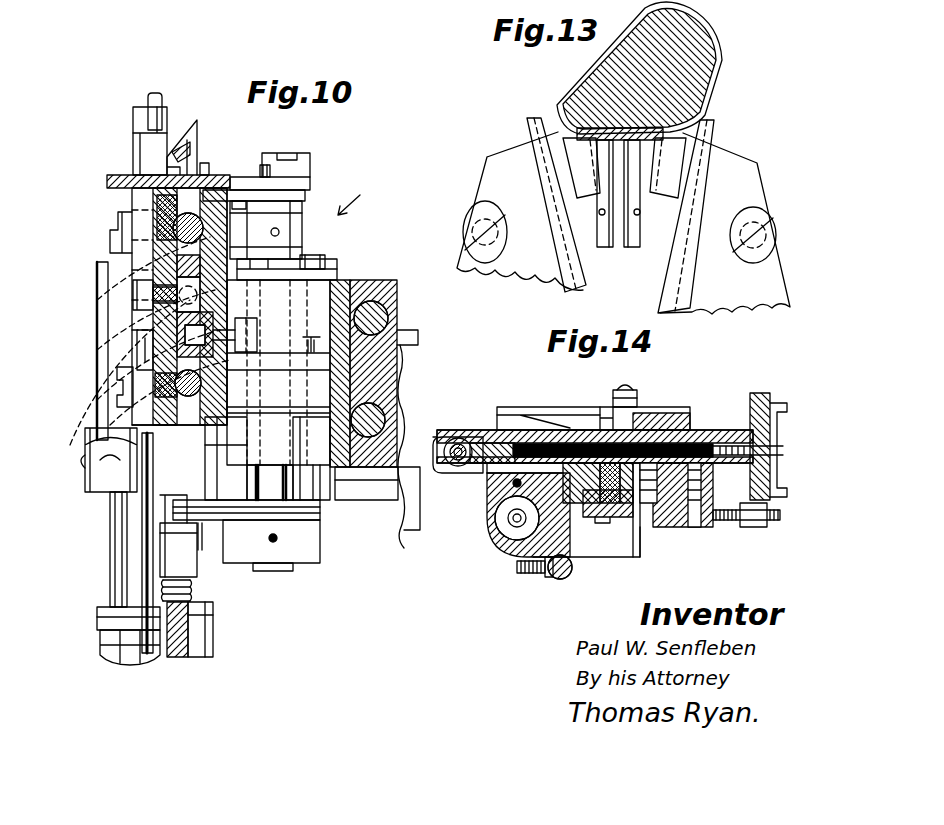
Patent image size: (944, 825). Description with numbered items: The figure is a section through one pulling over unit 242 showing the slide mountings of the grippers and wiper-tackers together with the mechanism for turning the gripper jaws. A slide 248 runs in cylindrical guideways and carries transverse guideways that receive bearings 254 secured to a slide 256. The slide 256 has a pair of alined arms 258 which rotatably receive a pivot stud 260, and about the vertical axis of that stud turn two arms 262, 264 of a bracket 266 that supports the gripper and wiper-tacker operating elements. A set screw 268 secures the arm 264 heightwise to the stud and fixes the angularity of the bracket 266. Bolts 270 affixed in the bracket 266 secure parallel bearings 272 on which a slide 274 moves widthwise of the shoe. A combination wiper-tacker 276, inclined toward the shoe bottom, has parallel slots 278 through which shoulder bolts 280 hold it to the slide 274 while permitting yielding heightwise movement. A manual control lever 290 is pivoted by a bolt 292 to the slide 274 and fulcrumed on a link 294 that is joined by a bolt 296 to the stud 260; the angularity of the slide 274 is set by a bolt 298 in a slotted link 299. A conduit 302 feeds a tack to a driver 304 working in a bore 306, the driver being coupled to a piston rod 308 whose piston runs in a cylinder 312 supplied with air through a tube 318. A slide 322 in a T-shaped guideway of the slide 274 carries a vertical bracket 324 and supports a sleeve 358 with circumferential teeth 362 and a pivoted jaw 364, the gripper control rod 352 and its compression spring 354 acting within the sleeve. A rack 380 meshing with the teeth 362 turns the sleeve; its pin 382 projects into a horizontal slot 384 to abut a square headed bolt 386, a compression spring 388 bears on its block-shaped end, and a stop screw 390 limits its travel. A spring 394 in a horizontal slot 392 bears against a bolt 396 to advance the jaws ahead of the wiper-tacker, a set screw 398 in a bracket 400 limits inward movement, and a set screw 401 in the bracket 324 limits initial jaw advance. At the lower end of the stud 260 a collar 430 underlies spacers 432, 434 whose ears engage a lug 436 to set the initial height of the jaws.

In FIG. 10, the pulling over unit 242 is at (368, 194).
In FIG. 10, the slide 248 is at (400, 330).
In FIG. 10, the bearings 254 is at (402, 340).
In FIG. 14, the bearings 254 is at (480, 430).
In FIG. 10, the slide 256 is at (318, 465).
In FIG. 10, the alined arms 258 is at (348, 282).
In FIG. 10, the pivot stud 260 is at (280, 571).
In FIG. 10, the arm 262 is at (242, 413).
In FIG. 10, the arm 264 is at (312, 207).
In FIG. 10, the bracket 266 is at (240, 200).
In FIG. 14, the bracket 266 is at (672, 410).
In FIG. 10, the set screw 268 is at (281, 232).
In FIG. 10, the bolts 270 is at (210, 166).
In FIG. 10, the bearings 272 is at (157, 215).
In FIG. 10, the slide 274 is at (110, 245).
In FIG. 14, the slide 274 is at (580, 495).
In FIG. 10, the wiper-tacker 276 is at (133, 115).
In FIG. 13, the wiper-tacker 276 is at (530, 268).
In FIG. 14, the wiper-tacker 276 is at (590, 520).
In FIG. 13, the slots 278 is at (487, 230).
In FIG. 10, the shoulder bolts 280 is at (115, 420).
In FIG. 13, the shoulder bolts 280 is at (500, 240).
In FIG. 10, the manual control lever 290 is at (115, 175).
In FIG. 10, the bolt 292 is at (170, 170).
In FIG. 10, the link 294 is at (310, 168).
In FIG. 10, the bolt 296 is at (268, 165).
In FIG. 10, the bolt 298 is at (325, 270).
In FIG. 10, the slotted link 299 is at (325, 270).
In FIG. 10, the conduit 302 is at (155, 93).
In FIG. 13, the conduit 302 is at (527, 128).
In FIG. 10, the driver 304 is at (142, 533).
In FIG. 14, the driver 304 is at (500, 520).
In FIG. 13, the bore 306 is at (660, 275).
In FIG. 10, the piston rod 308 is at (110, 515).
In FIG. 10, the cylinder 312 is at (97, 340).
In FIG. 14, the cylinder 312 is at (520, 547).
In FIG. 10, the tube 318 is at (85, 478).
In FIG. 10, the slide 322 is at (137, 350).
In FIG. 14, the slide 322 is at (490, 478).
In FIG. 14, the bracket 324 is at (750, 400).
In FIG. 10, the gripper control rod 352 is at (188, 657).
In FIG. 14, the gripper control rod 352 is at (483, 468).
In FIG. 10, the compression spring 354 is at (197, 600).
In FIG. 10, the sleeve 358 is at (193, 582).
In FIG. 14, the sleeve 358 is at (452, 466).
In FIG. 14, the teeth 362 is at (440, 452).
In FIG. 13, the jaw 364 is at (640, 180).
In FIG. 10, the rack 380 is at (117, 395).
In FIG. 14, the rack 380 is at (482, 430).
In FIG. 14, the pin 382 is at (580, 440).
In FIG. 14, the horizontal slot 384 is at (603, 410).
In FIG. 10, the square headed bolt 386 is at (312, 332).
In FIG. 14, the square headed bolt 386 is at (633, 390).
In FIG. 10, the compression spring 388 is at (137, 355).
In FIG. 14, the compression spring 388 is at (540, 412).
In FIG. 14, the stop screw 390 is at (780, 445).
In FIG. 10, the horizontal slot 392 is at (177, 262).
In FIG. 10, the spring 394 is at (177, 300).
In FIG. 10, the bolt 396 is at (133, 295).
In FIG. 14, the set screw 398 is at (527, 575).
In FIG. 14, the bracket 400 is at (678, 527).
In FIG. 14, the set screw 401 is at (765, 527).
In FIG. 10, the collar 430 is at (320, 548).
In FIG. 10, the spacer 432 is at (320, 514).
In FIG. 10, the spacer 434 is at (330, 500).
In FIG. 10, the lug 436 is at (205, 540).